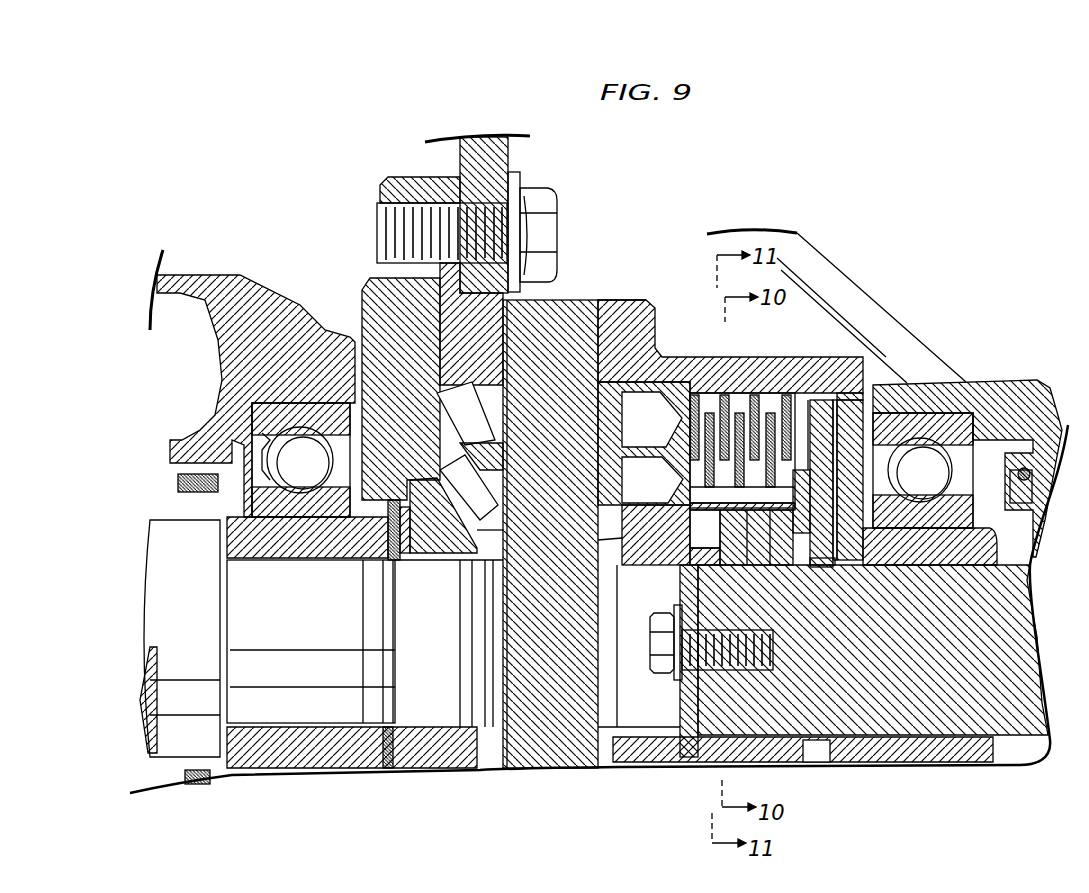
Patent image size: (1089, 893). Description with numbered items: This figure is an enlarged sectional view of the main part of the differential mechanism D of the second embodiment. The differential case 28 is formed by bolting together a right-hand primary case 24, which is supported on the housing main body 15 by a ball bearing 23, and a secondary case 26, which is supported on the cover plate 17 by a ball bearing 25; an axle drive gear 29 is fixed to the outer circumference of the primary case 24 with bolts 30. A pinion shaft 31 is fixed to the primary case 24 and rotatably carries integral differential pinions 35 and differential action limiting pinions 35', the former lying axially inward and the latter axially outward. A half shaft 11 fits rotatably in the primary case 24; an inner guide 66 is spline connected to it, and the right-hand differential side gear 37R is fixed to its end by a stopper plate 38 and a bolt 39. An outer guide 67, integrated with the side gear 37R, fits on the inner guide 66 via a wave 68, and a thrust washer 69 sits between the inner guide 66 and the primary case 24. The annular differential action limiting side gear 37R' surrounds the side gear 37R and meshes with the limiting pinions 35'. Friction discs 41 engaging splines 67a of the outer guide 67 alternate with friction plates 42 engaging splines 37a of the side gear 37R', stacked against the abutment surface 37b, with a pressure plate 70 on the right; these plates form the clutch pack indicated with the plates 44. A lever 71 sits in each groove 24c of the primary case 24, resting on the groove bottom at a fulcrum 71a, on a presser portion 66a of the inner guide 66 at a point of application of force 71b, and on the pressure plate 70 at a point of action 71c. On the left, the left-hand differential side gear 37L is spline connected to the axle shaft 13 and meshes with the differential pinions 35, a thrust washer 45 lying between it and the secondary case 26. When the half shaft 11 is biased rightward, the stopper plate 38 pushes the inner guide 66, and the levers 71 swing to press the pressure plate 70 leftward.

The cover plate 17 is at (210, 283).
The ball bearing 25 is at (297, 440).
The secondary case 26 is at (363, 290).
The axle drive gear 29 is at (497, 150).
The bolt 30 is at (540, 222).
The pinion shaft 31 is at (567, 327).
The differential case 28 is at (616, 296).
The primary case 24 is at (638, 327).
The differential action limiting side gear 37R' is at (668, 373).
The abutment surface 37b is at (696, 392).
The clutch plate 44 is at (726, 392).
The friction plate 42 is at (769, 390).
The spline 37a is at (784, 393).
The pressure plate 70 is at (800, 398).
The groove 24c is at (838, 395).
The point of action 71c is at (848, 397).
The lever 71 is at (842, 436).
The housing main body 15 is at (863, 320).
The ball bearing 23 is at (925, 440).
The differential mechanism D is at (837, 249).
The differential action limiting pinion 35' is at (505, 404).
The differential pinion 35 is at (506, 463).
The spline 67a is at (697, 477).
The fulcrum 71a is at (850, 465).
The left-hand differential side gear 37L is at (477, 535).
The right-hand differential side gear 37R is at (577, 554).
The friction disc 41 is at (705, 537).
The thrust washer 69 is at (836, 518).
The thrust washer 45 is at (398, 540).
The left-hand axle shaft 13 is at (309, 618).
The stopper plate 38 is at (680, 593).
The bolt 39 is at (653, 643).
The inner guide 66 is at (725, 572).
The outer guide 67 is at (747, 572).
The wave 68 is at (798, 573).
The presser portion 66a is at (818, 570).
The point of application of force 71b is at (850, 570).
The half shaft 11 is at (879, 678).